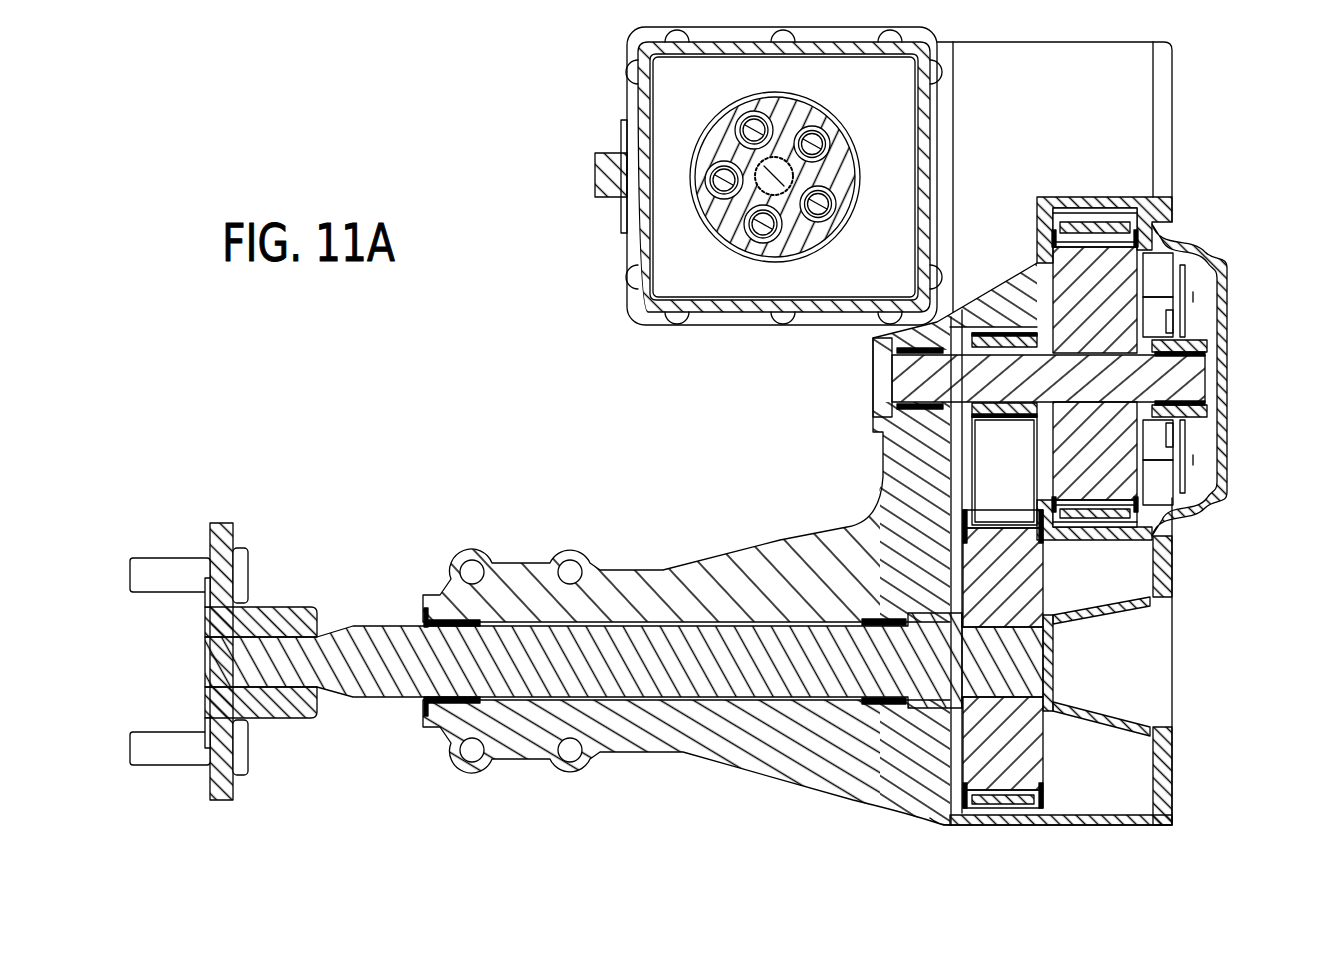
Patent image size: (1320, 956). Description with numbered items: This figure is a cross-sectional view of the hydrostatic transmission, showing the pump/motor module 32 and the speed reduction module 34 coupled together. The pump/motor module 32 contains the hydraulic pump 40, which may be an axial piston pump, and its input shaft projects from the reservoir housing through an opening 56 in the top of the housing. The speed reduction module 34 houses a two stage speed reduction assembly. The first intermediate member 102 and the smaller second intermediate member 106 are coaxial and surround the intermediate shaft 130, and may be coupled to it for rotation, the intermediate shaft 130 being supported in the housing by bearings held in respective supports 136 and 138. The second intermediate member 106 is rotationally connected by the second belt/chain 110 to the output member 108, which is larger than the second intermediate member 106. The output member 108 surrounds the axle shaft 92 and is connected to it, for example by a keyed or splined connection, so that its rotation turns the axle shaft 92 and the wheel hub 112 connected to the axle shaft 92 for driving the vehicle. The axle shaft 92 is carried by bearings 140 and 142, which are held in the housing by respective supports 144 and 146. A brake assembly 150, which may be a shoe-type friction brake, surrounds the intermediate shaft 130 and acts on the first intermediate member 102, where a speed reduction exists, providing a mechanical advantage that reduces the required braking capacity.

The pump/motor module 32 is at (606, 92).
The speed reduction module 34 is at (1190, 588).
The hydraulic pump 40 is at (828, 90).
The opening 56 is at (778, 160).
The axle shaft 92 is at (383, 625).
The first intermediate member 102 is at (1152, 240).
The second intermediate member 106 is at (874, 428).
The output member 108 is at (1012, 773).
The second belt/chain 110 is at (1012, 478).
The wheel hub 112 is at (275, 612).
The intermediate shaft 130 is at (920, 371).
The support 136 is at (890, 346).
The support 138 is at (1192, 337).
The bearing 140 is at (885, 612).
The bearing 142 is at (460, 617).
The support 144 is at (890, 706).
The support 146 is at (465, 710).
The brake assembly 150 is at (1187, 307).